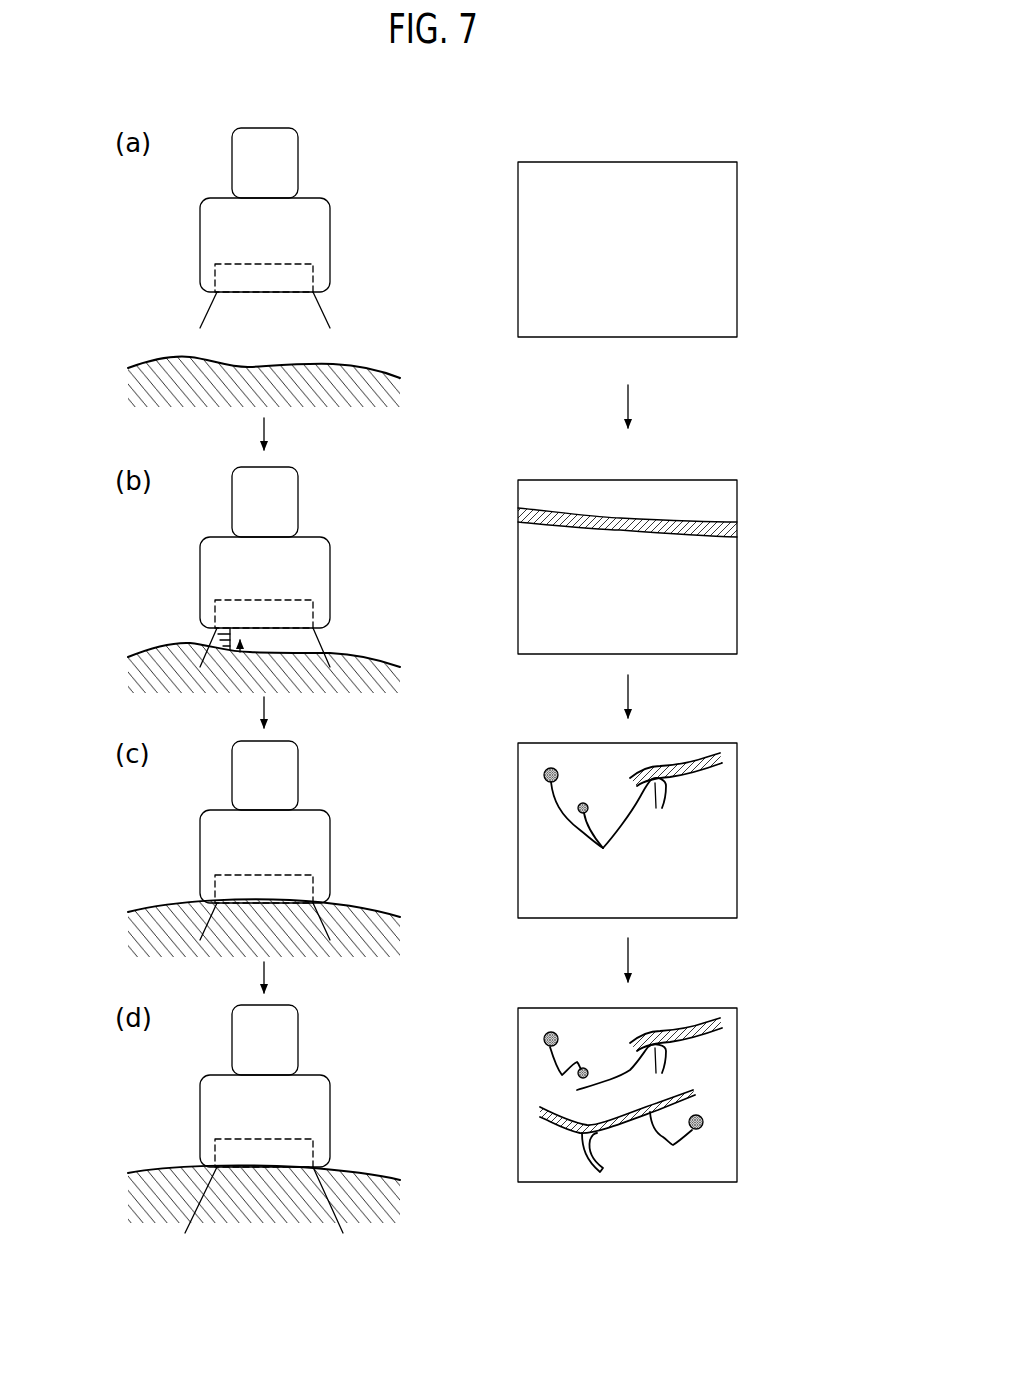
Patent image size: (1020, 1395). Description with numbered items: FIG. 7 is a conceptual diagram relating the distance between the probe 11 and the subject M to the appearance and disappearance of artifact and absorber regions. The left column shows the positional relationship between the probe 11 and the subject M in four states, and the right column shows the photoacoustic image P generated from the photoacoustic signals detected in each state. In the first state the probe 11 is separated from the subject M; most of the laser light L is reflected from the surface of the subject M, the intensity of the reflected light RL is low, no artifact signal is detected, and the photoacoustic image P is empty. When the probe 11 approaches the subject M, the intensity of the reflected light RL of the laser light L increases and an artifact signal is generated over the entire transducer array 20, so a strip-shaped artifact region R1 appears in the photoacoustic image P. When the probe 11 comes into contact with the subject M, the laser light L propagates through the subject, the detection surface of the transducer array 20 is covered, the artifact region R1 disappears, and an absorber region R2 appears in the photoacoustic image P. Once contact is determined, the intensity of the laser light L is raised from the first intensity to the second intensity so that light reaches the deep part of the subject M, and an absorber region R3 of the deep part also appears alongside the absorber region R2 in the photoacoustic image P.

The probe 11 is at (298, 148).
The transducer array 20 is at (290, 264).
The laser light L is at (322, 307).
The subject M is at (365, 376).
The reflected light RL is at (213, 633).
The photoacoustic image P is at (710, 162).
The artifact region R1 is at (737, 525).
The absorber region R2 is at (632, 931).
The absorber region of deep part R3 is at (621, 1134).